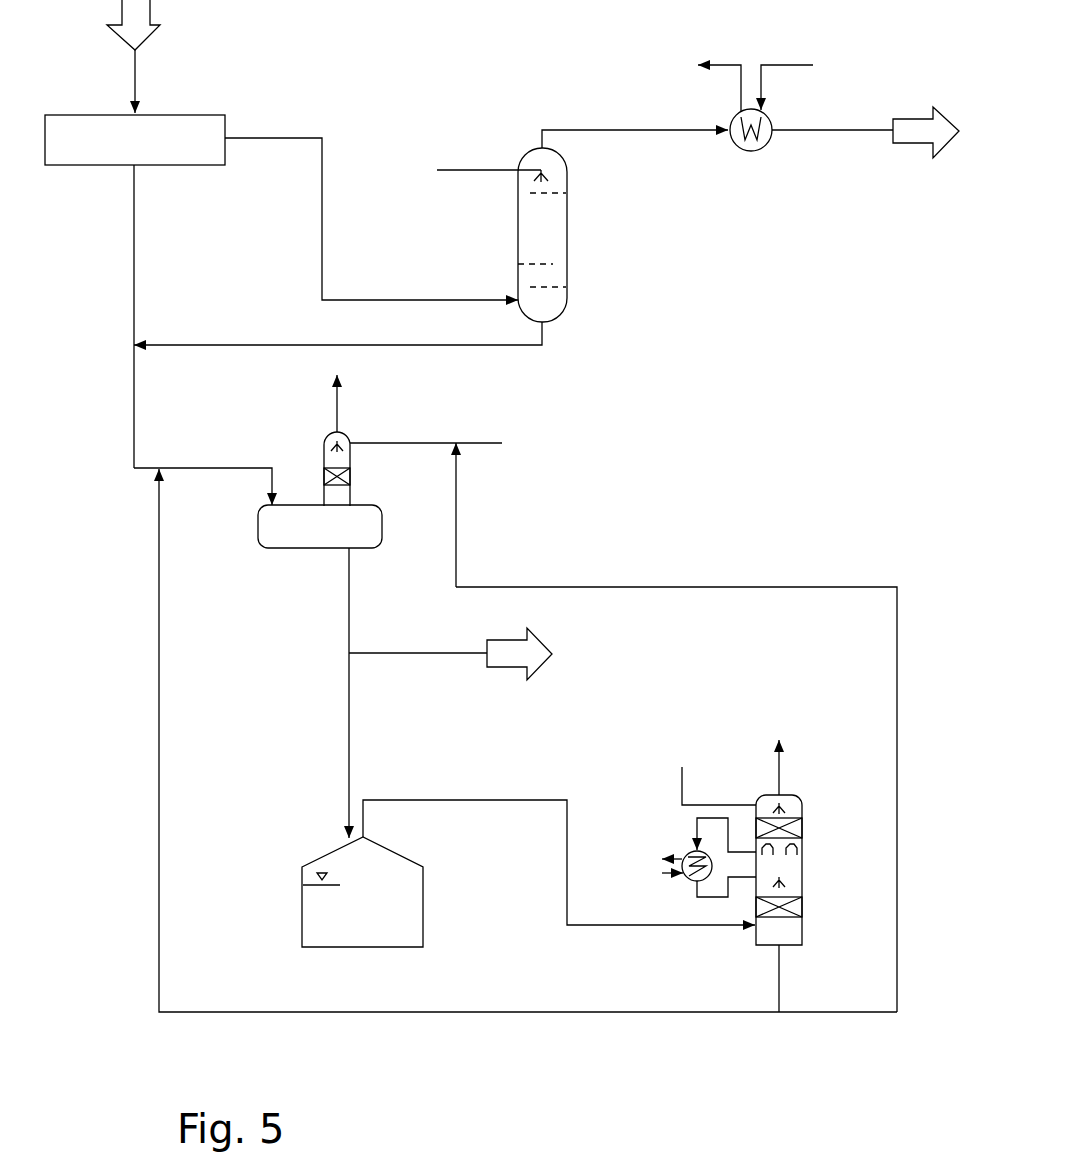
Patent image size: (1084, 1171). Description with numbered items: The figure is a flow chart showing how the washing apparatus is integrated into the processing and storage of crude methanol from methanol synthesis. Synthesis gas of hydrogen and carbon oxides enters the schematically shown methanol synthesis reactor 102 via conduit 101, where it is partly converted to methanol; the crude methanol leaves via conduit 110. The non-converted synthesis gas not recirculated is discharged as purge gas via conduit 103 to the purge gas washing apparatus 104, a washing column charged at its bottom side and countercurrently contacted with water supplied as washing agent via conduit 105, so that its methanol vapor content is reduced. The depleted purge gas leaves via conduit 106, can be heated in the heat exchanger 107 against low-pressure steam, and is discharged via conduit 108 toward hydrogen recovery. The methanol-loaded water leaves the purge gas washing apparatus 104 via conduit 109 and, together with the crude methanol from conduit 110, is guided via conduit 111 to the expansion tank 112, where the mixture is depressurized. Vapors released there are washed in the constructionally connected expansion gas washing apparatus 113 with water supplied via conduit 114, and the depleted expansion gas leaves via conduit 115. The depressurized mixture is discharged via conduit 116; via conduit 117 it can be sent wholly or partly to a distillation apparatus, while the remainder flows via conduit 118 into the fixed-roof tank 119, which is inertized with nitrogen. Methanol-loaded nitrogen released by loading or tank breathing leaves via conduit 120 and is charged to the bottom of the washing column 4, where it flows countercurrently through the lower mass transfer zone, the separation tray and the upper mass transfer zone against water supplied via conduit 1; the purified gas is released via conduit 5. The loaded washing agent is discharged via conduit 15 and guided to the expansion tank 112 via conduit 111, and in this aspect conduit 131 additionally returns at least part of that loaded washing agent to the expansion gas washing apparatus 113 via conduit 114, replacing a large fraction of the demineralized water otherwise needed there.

The conduit 101 is at (138, 78).
The methanol synthesis reactor 102 is at (135, 140).
The conduit 103 is at (325, 232).
The purge gas washing apparatus 104 is at (567, 224).
The conduit 105 is at (490, 168).
The conduit 106 is at (618, 128).
The heat exchanger 107 is at (751, 151).
The conduit 108 is at (820, 128).
The conduit 109 is at (300, 342).
The conduit 110 is at (138, 277).
The conduit 111 is at (137, 452).
The expansion tank 112 is at (312, 548).
The expansion gas washing apparatus 113 is at (365, 469).
The conduit 114 is at (452, 508).
The conduit 115 is at (311, 403).
The conduit 116 is at (349, 683).
The conduit 117 is at (383, 653).
The conduit 118 is at (348, 798).
The tank 119 is at (362, 892).
The conduit 120 is at (468, 802).
The conduit 131 is at (695, 585).
The conduit 15 is at (465, 1008).
The conduit 1 is at (715, 772).
The washing column 4 is at (802, 875).
The conduit 5 is at (779, 754).